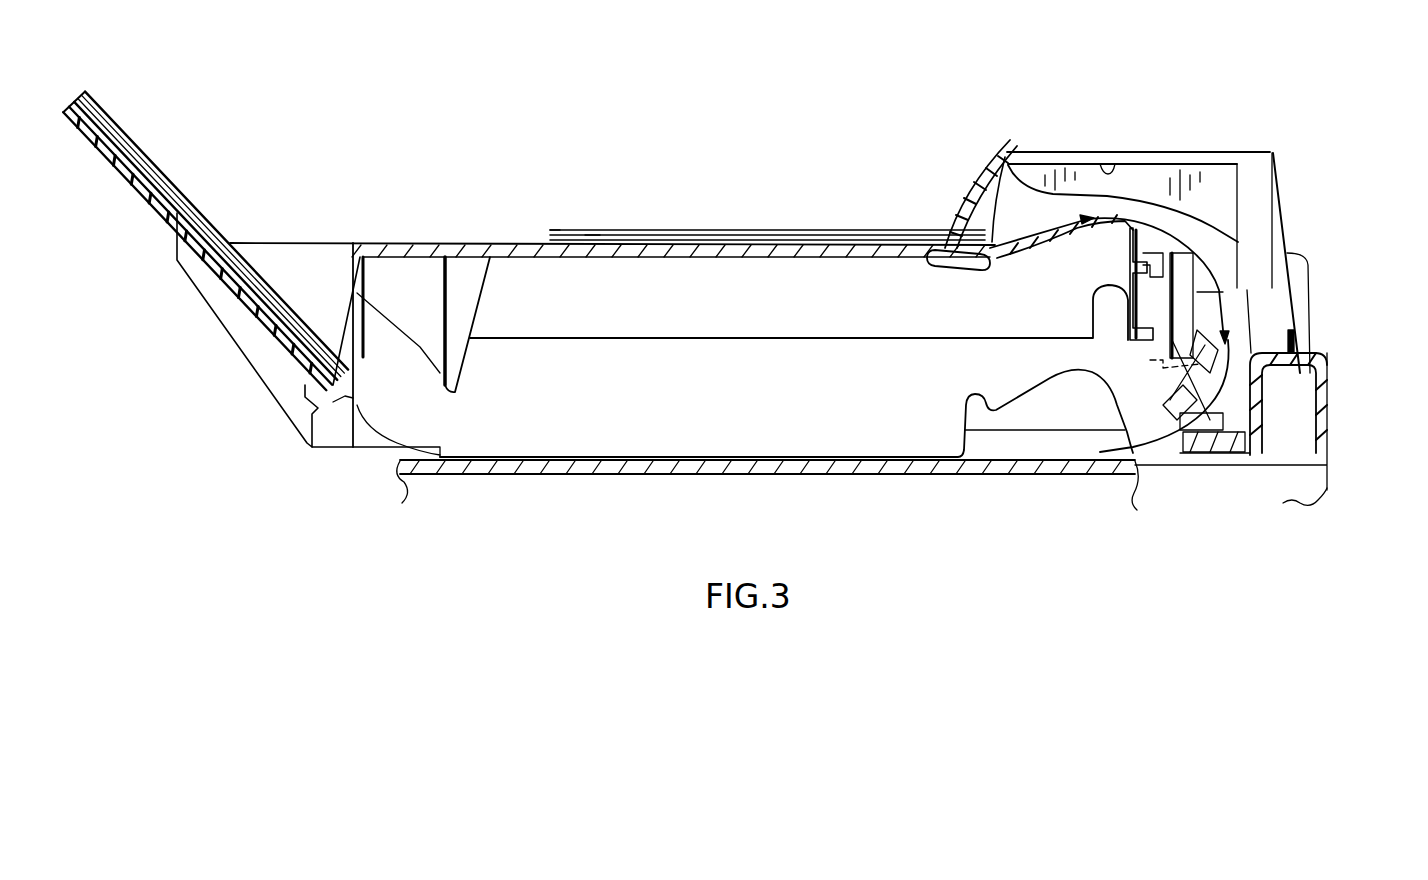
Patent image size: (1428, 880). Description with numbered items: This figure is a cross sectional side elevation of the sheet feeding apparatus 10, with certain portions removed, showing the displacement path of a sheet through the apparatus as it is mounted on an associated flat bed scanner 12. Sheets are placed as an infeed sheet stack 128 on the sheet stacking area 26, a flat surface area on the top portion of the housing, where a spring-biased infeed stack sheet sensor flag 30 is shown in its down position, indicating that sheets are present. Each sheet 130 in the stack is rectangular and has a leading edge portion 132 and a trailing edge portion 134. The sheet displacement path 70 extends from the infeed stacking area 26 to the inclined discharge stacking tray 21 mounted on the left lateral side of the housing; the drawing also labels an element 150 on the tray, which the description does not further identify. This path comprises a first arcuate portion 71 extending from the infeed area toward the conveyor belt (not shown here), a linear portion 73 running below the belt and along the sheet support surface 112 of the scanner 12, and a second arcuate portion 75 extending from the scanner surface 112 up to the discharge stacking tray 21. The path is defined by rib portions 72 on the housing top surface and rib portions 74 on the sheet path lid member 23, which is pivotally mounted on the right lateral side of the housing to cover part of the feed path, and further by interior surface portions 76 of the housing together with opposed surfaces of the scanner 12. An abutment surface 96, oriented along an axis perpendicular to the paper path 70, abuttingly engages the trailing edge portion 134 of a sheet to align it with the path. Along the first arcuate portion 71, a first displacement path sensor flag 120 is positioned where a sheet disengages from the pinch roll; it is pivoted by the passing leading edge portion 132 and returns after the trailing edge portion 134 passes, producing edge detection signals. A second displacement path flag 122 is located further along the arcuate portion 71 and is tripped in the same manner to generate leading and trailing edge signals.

The sheet feeding apparatus 10 is at (335, 203).
The flat bed scanner 12 is at (1329, 490).
The discharge stacking tray 21 is at (140, 175).
The sheet path lid member 23 is at (1115, 152).
The sheet stacking area 26 is at (480, 245).
The infeed stack sheet sensor flag 30 is at (975, 270).
The sheet displacement path 70 is at (1207, 244).
The first arcuate portion 71 is at (1197, 292).
The rib portions 72 is at (1037, 257).
The linear portion 73 is at (988, 461).
The rib portions 74 is at (1130, 183).
The second arcuate portion 75 is at (339, 402).
The interior surface portions 76 is at (1236, 311).
The abutment surface 96 is at (1252, 420).
The sheet support surface 112 is at (612, 462).
The first displacement path sensor flag 120 is at (1240, 284).
The second displacement path flag 122 is at (1176, 432).
The infeed sheet stack 128 is at (592, 228).
The sheet 130 is at (99, 110).
The leading edge portion 132 is at (1017, 140).
The trailing edge portion 134 is at (552, 240).
The lid strip 150 is at (134, 142).